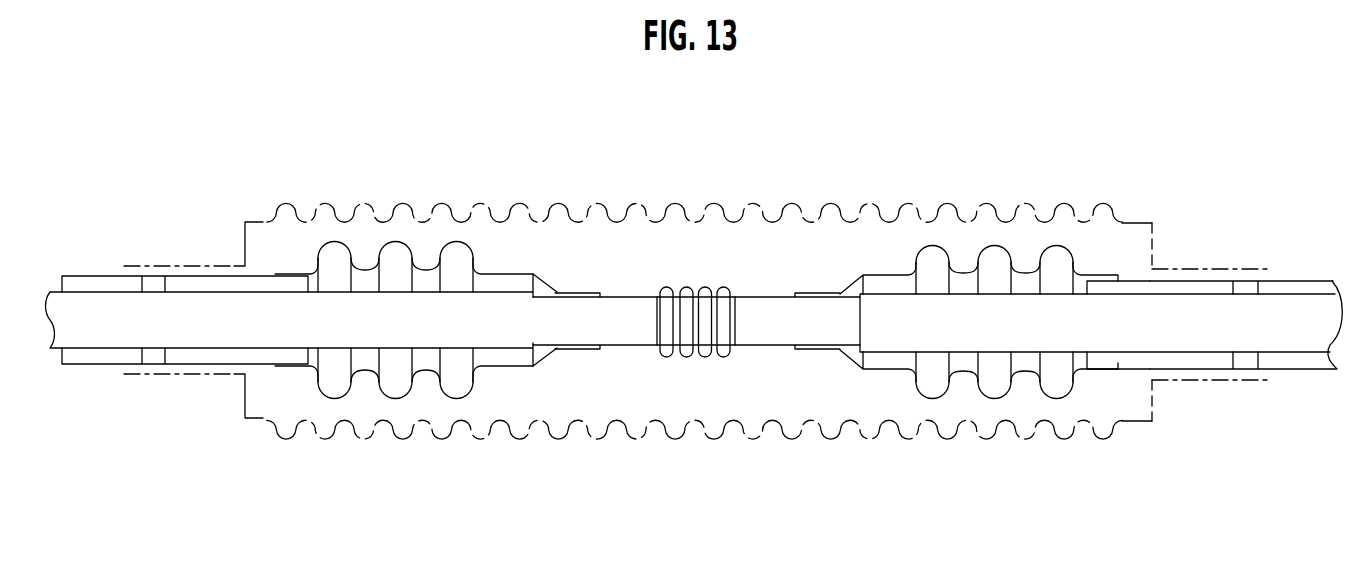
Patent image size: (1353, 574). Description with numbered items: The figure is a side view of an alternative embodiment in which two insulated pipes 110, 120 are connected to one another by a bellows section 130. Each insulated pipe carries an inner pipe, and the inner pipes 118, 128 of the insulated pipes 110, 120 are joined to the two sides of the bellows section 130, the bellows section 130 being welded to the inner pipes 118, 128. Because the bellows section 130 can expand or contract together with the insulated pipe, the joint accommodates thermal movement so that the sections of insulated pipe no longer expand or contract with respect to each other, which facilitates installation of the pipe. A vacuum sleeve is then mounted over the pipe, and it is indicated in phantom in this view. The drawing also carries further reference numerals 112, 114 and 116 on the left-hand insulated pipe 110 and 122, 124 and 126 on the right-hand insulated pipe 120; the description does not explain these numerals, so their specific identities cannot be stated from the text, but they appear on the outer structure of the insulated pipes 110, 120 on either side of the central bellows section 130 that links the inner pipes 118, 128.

The insulated pipe 110 is at (428, 248).
The first outer sleeve 112 is at (203, 364).
The housing (phantom) 114 is at (698, 338).
The first boot 116 is at (400, 398).
The inner pipe 118 is at (627, 347).
The insulated pipe 120 is at (1022, 253).
The second outer sleeve 122 is at (1278, 370).
The sleeve end adapter 124 is at (1138, 355).
The second boot 126 is at (937, 402).
The inner pipe 128 is at (773, 347).
The bellows section 130 is at (702, 270).